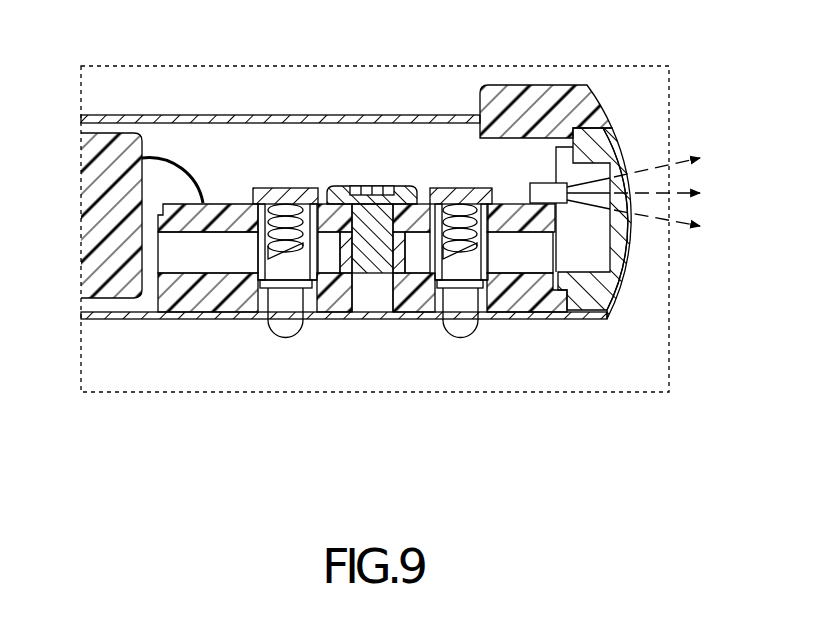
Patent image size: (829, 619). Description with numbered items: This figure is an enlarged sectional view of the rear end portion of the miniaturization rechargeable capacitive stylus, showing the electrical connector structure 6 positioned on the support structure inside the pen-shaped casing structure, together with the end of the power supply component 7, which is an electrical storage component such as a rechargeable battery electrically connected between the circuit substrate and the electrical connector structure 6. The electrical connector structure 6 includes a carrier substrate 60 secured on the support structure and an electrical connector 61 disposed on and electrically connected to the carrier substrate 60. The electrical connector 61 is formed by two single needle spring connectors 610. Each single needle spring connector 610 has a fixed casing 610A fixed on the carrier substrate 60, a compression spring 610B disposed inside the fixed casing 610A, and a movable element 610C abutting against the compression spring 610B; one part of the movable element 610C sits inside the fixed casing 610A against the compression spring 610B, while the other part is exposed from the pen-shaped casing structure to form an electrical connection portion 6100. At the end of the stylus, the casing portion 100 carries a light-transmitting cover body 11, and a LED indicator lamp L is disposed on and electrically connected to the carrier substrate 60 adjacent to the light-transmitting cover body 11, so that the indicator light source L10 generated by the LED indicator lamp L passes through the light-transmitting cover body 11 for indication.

The power supply component 7 is at (84, 157).
The carrier substrate 60 is at (222, 212).
The electrical connector structure 6 is at (346, 186).
The electrical connector 61 is at (369, 353).
The single needle spring connector 610 is at (369, 332).
The fixed casing 610A is at (263, 247).
The compression spring 610B is at (283, 252).
The movable element 610C is at (292, 321).
The electrical connection portion 6100 is at (458, 318).
The head housing 100 is at (498, 103).
The light-transmitting cover body 11 is at (620, 257).
The LED indicator lamp L is at (528, 186).
The indicator light source L10 is at (656, 190).